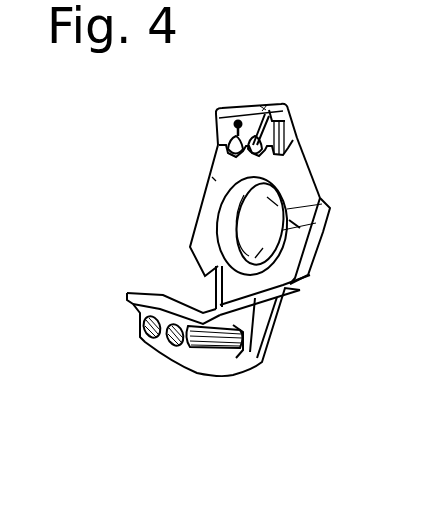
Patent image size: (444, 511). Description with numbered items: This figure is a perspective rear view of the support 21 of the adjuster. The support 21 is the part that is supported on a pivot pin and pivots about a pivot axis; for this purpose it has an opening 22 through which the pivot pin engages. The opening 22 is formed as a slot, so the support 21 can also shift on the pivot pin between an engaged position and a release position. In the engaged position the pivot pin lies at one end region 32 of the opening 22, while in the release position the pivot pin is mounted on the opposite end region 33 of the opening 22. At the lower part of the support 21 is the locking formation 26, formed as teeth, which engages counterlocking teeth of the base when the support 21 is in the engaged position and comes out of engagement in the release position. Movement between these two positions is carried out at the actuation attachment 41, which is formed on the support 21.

The support 21 is at (212, 162).
The opening 22 is at (246, 237).
The locking formation 26 is at (155, 345).
The end region 32 is at (321, 200).
The end region 33 is at (289, 220).
The actuation attachment 41 is at (259, 104).